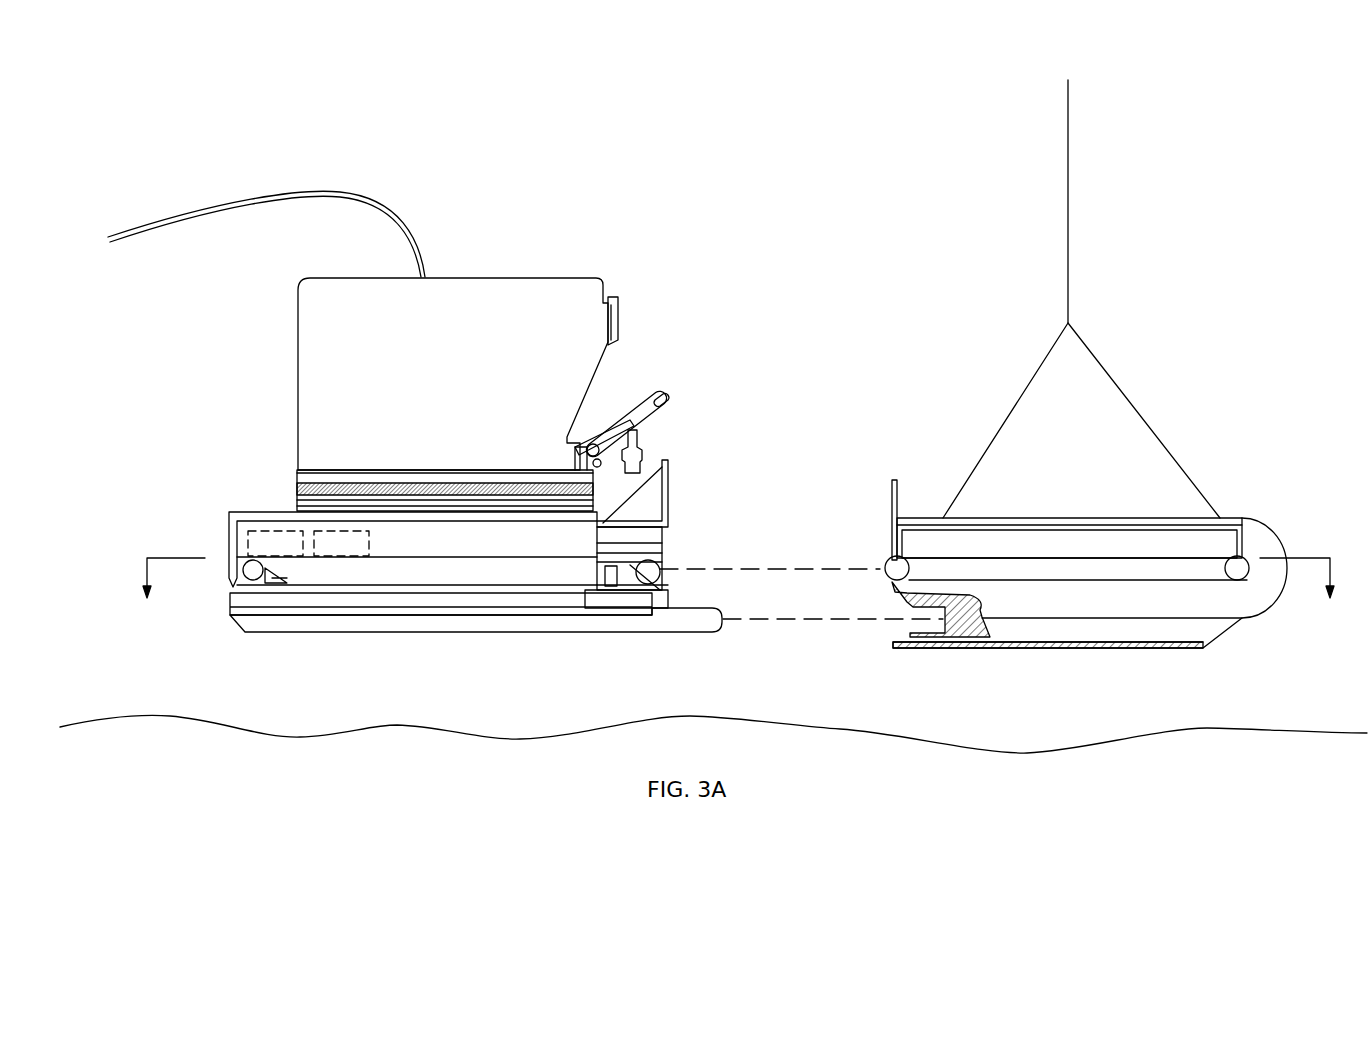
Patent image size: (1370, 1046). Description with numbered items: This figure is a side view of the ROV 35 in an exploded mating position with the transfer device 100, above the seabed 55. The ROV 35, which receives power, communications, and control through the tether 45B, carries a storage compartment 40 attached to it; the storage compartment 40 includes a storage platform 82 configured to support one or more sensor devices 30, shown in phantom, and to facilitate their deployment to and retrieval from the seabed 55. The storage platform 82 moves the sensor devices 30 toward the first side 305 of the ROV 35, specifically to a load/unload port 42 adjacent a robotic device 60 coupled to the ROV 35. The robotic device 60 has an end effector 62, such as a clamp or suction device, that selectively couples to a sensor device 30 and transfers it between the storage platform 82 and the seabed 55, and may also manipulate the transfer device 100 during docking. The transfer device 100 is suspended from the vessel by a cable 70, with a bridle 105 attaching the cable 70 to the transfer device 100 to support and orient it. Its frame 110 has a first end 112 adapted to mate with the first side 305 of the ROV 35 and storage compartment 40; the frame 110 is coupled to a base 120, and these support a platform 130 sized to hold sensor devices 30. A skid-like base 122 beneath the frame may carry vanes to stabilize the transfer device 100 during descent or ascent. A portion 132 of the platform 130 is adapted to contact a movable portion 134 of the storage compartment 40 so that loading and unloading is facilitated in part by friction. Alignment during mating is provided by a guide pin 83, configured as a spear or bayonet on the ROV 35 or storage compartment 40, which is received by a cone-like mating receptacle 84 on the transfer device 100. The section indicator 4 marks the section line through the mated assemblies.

The sensor device 30 is at (350, 552).
The ROV 35 is at (556, 278).
The storage compartment 40 is at (445, 454).
The load/unload port 42 is at (624, 500).
The tether 45B is at (188, 207).
The seabed 55 is at (88, 720).
The robotic device 60 is at (660, 395).
The end effector 62 is at (659, 402).
The cable 70 is at (1072, 207).
The storage platform 82 is at (671, 544).
The guide pin 83 is at (720, 630).
The mating receptacle 84 is at (925, 626).
The transfer device 100 is at (1060, 399).
The bridle 105 is at (1043, 360).
The frame 110 is at (1245, 517).
The first end 112 is at (870, 508).
The base 120 is at (1094, 668).
The base 122 is at (1152, 650).
The platform 130 is at (1047, 567).
The portion of the platform 132 is at (888, 565).
The movable portion 134 is at (668, 566).
The first side 305 is at (770, 447).
The section line 4- 4 is at (739, 596).